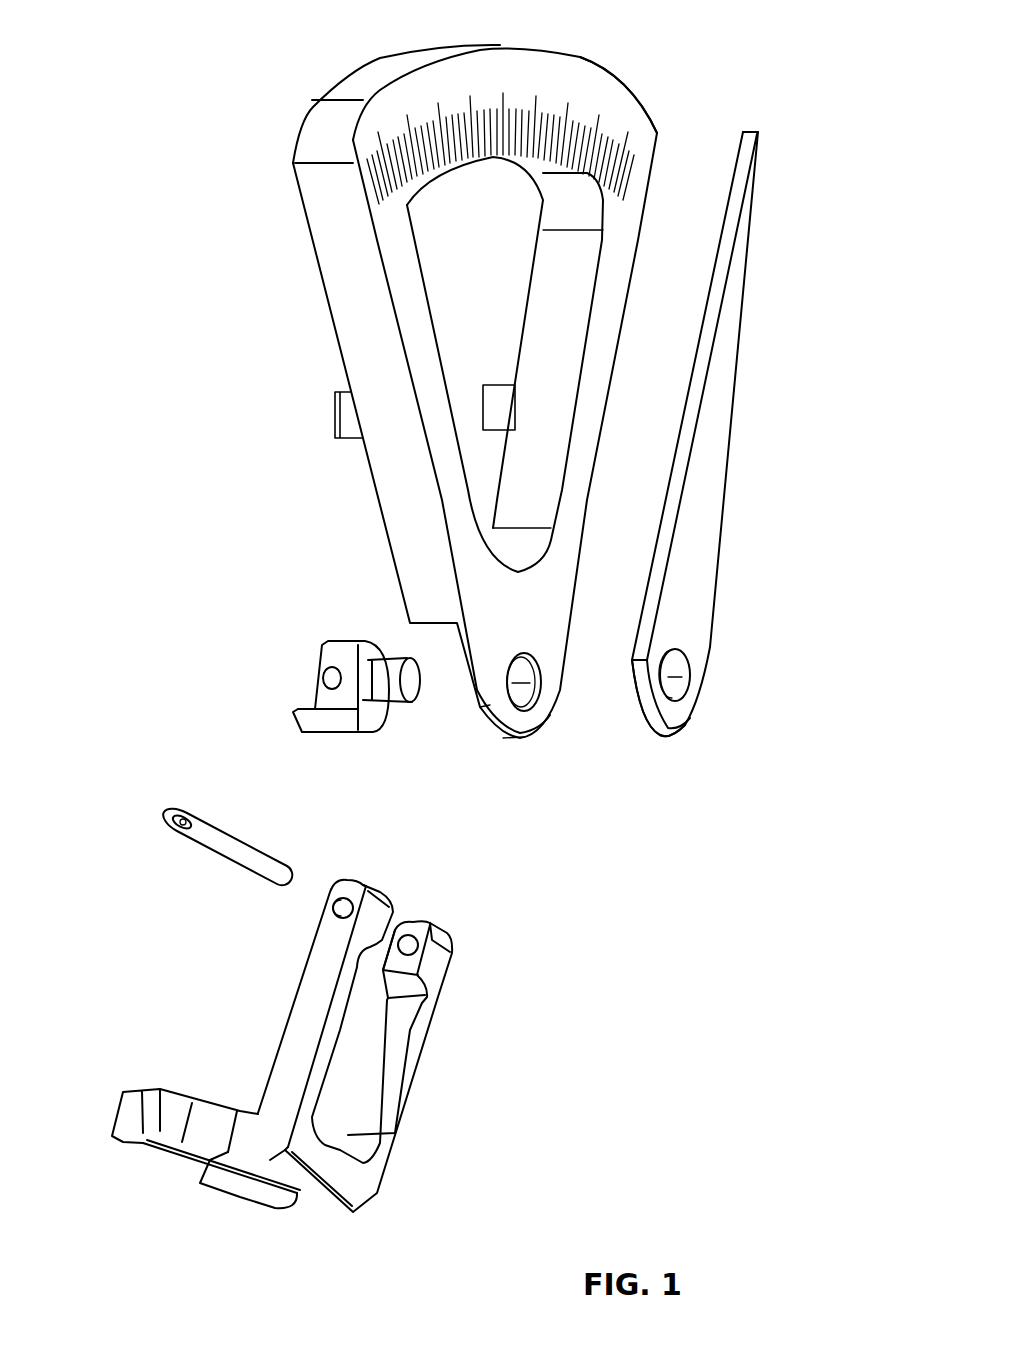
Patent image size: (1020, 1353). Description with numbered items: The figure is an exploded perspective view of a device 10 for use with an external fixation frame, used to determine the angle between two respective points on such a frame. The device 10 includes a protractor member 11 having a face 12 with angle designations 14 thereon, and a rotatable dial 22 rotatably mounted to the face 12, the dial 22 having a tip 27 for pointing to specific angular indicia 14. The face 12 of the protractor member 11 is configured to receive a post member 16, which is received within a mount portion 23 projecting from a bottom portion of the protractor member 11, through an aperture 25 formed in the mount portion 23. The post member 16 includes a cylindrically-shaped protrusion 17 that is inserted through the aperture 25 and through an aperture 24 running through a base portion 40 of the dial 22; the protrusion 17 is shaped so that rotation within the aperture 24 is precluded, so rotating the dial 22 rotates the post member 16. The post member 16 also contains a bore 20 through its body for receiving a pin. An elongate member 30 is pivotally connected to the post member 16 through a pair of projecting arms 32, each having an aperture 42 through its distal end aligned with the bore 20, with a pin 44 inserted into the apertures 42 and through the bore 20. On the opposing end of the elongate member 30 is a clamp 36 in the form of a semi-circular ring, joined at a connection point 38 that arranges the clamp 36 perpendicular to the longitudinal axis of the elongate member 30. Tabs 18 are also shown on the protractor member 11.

The device 10 is at (148, 40).
The protractor member 11 is at (597, 400).
The face 12 is at (560, 68).
The angle designations 14 is at (590, 118).
The post member 16 is at (335, 727).
The cylindrically-shaped protrusion 17 is at (410, 692).
The tabs 18 is at (345, 412).
The bore 20 is at (332, 680).
The rotatable dial 22 is at (710, 512).
The mount portion 23 is at (512, 683).
The aperture 24 is at (667, 677).
The aperture 25 is at (545, 689).
The tip 27 is at (752, 131).
The elongate member 30 is at (375, 1176).
The arms 32 is at (305, 1010).
The clamp 36 is at (177, 1103).
The connection point 38 is at (257, 1147).
The base portion 40 is at (678, 722).
The aperture 42 is at (343, 905).
The pin 44 is at (180, 822).